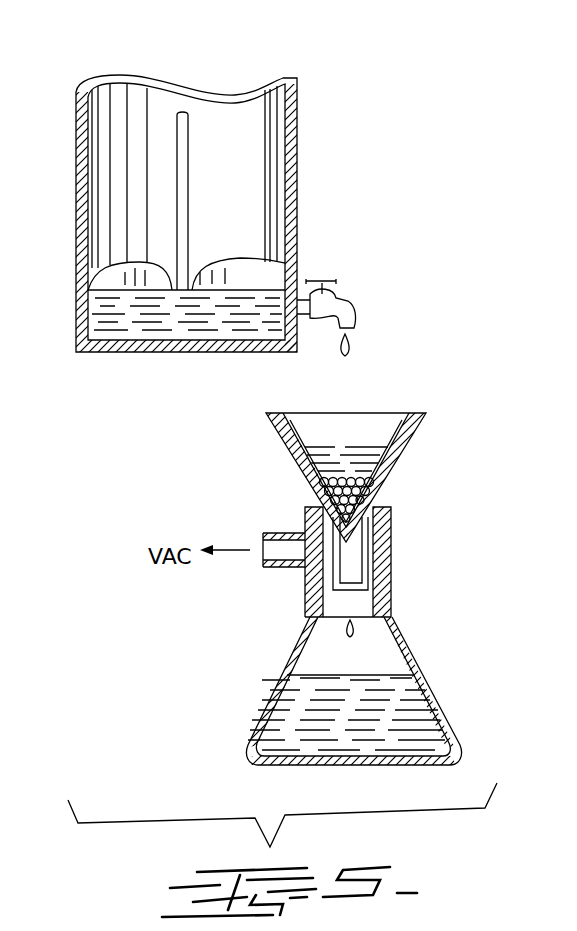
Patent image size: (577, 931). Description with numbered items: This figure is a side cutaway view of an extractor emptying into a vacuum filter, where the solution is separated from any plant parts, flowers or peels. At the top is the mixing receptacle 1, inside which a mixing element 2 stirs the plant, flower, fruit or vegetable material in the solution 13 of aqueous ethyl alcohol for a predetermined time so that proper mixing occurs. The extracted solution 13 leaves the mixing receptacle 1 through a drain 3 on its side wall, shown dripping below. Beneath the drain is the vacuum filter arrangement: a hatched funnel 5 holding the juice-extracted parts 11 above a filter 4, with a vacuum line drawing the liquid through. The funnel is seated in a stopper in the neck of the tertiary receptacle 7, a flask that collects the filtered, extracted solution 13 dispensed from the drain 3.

The mixing receptacle 1 is at (297, 150).
The mixing element 2 is at (187, 135).
The solution 13 is at (260, 297).
The drain 3 is at (345, 297).
The funnel 5 is at (394, 420).
The filter 4 is at (393, 481).
The juice-extracted parts 11 is at (328, 473).
The tertiary receptacle 7 is at (390, 575).